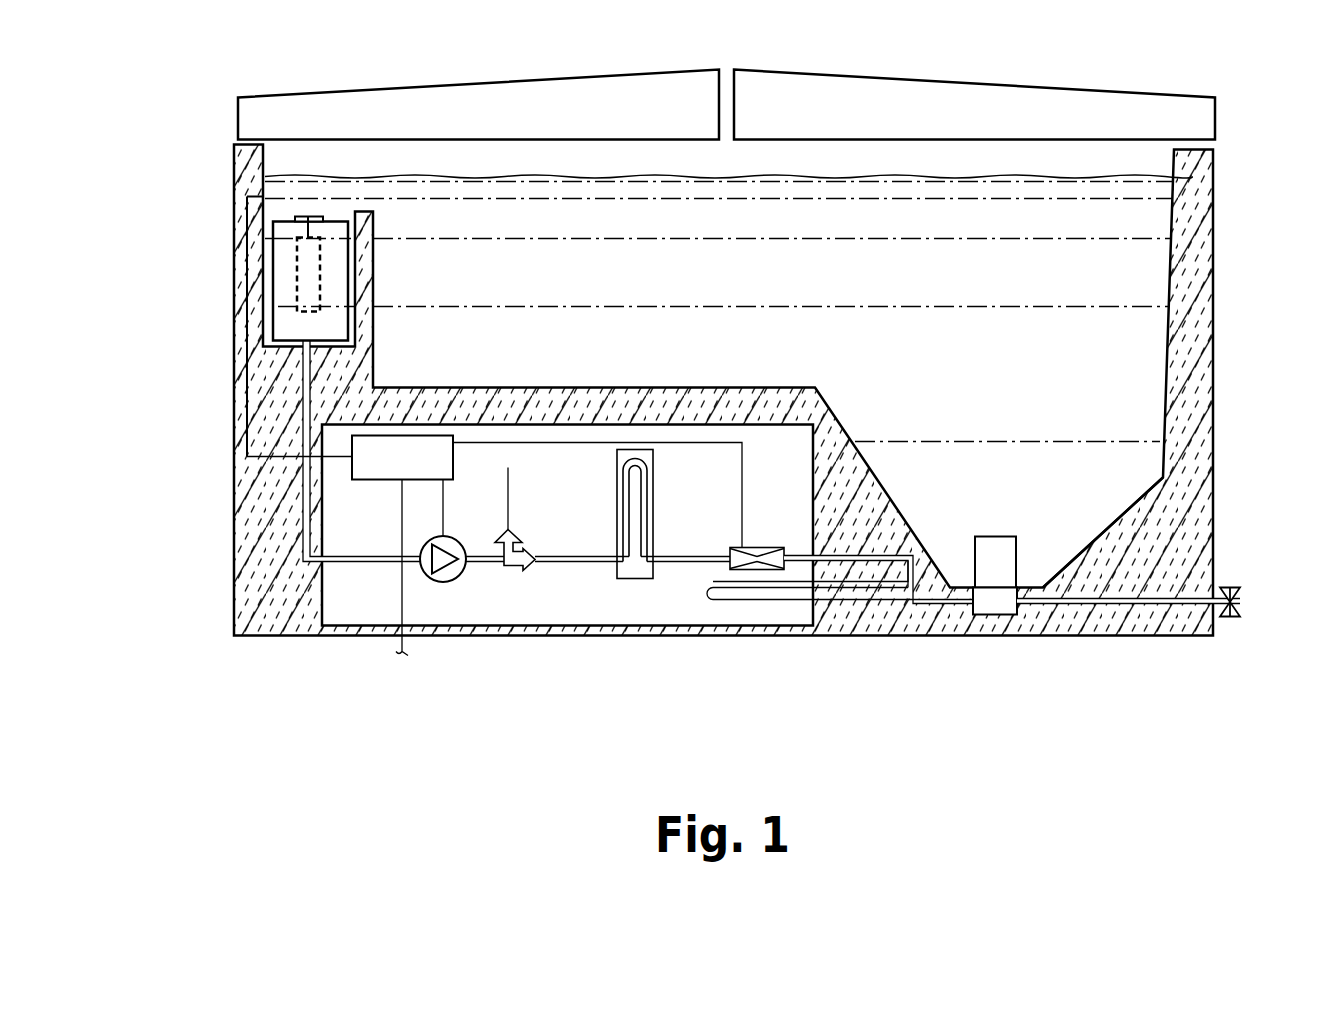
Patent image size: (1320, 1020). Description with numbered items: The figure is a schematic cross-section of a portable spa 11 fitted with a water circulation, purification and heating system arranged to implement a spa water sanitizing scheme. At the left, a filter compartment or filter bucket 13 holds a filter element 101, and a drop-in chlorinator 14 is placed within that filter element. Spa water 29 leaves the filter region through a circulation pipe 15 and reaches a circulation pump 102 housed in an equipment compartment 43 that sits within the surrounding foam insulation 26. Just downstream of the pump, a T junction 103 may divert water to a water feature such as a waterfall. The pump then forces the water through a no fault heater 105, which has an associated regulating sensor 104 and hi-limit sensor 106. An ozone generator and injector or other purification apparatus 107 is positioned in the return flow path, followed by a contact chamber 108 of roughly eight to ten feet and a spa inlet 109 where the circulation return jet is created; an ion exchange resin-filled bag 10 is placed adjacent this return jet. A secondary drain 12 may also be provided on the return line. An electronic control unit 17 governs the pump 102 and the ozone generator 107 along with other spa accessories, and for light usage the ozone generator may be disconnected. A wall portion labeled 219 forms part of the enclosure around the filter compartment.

The ion exchange resin-filled bag 10 is at (1022, 544).
The portable spa 11 is at (1248, 246).
The secondary drain 12 is at (1237, 601).
The filter compartment 13 is at (280, 215).
The drop-in chlorinator 14 is at (297, 293).
The circulation pipe 15 is at (353, 568).
The electronic control unit 17 is at (494, 500).
The insulation 26 is at (1169, 569).
The spa water 29 is at (831, 287).
The equipment compartment 43 is at (577, 611).
The filter element 101 is at (283, 263).
The circulation pump 102 is at (452, 535).
The T junction 103 is at (517, 538).
The regulating sensor 104 is at (613, 555).
The no fault heater 105 is at (657, 473).
The hi-limit sensor 106 is at (656, 555).
The ozone generator 107 is at (765, 548).
The contact chamber 108 is at (852, 556).
The spa inlet 109 is at (997, 600).
The inner wall 219 is at (248, 217).